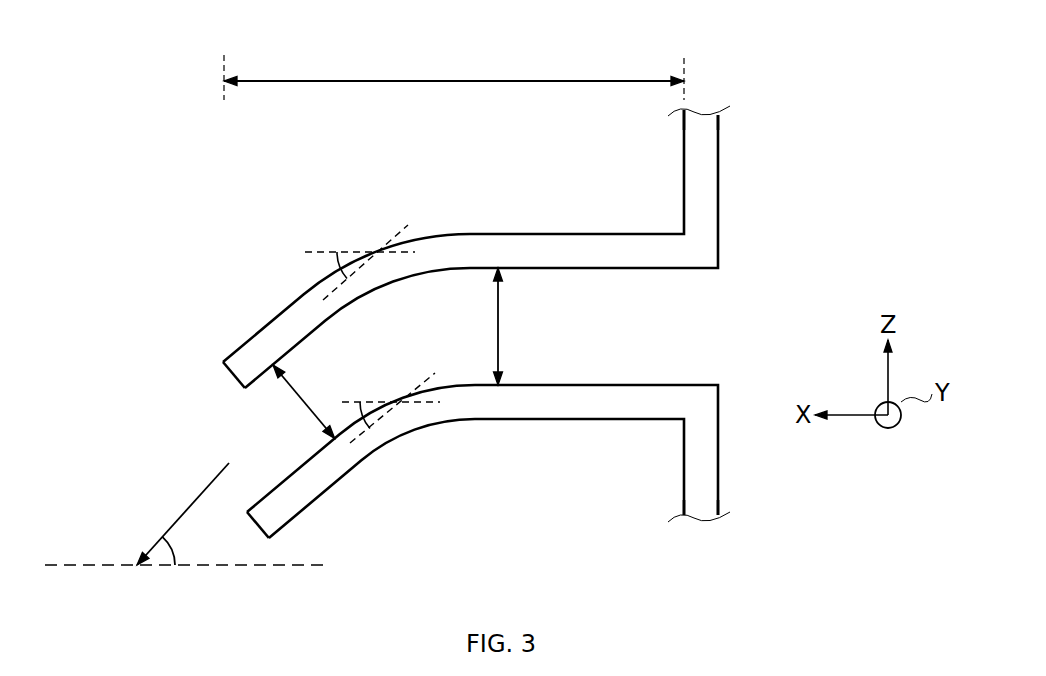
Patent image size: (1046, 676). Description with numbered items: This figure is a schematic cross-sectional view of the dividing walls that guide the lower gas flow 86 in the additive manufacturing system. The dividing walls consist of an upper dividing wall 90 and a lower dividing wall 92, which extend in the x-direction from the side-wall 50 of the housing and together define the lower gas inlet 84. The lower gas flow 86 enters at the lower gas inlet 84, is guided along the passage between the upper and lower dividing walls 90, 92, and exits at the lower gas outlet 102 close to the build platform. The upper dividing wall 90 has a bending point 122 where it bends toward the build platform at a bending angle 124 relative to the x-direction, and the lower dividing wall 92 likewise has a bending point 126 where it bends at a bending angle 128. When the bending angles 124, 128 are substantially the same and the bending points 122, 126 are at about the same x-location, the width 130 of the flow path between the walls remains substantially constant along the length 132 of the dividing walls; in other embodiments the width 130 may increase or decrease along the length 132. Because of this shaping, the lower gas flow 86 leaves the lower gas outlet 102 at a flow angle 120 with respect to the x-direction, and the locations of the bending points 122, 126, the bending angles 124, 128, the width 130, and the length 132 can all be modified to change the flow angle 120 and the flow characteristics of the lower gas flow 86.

The side-wall 50 is at (710, 158).
The lower gas inlet 84 is at (700, 334).
The lower gas flow 86 is at (206, 490).
The upper dividing wall 90 is at (560, 248).
The lower dividing wall 92 is at (550, 424).
The lower gas outlet 102 is at (252, 437).
The flow angle 120 is at (185, 566).
The bending point 122 is at (373, 202).
The bending angle 124 is at (340, 262).
The bending point 126 is at (426, 447).
The bending angle 128 is at (364, 432).
The width 130 is at (502, 328).
The length 132 is at (454, 80).